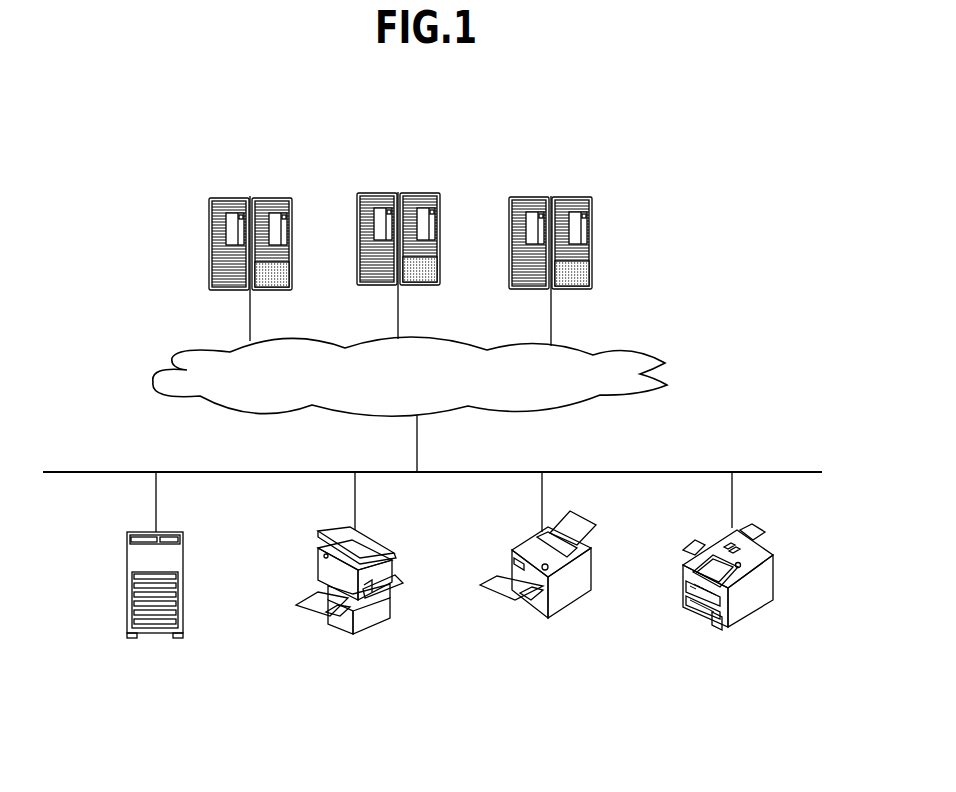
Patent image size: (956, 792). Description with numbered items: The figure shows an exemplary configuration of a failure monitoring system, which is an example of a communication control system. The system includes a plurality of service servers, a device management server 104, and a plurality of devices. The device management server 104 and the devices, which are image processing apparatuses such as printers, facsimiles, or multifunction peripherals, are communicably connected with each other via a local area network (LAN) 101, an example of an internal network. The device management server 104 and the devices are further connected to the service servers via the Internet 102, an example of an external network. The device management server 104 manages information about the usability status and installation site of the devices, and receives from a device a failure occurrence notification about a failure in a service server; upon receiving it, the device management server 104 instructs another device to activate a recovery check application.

The local area network (LAN) 101 is at (682, 470).
The Internet 102 is at (620, 350).
The device management server 104 is at (157, 639).